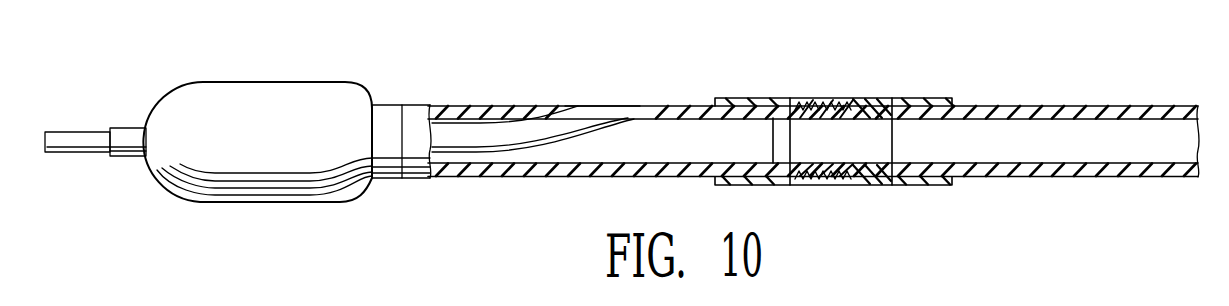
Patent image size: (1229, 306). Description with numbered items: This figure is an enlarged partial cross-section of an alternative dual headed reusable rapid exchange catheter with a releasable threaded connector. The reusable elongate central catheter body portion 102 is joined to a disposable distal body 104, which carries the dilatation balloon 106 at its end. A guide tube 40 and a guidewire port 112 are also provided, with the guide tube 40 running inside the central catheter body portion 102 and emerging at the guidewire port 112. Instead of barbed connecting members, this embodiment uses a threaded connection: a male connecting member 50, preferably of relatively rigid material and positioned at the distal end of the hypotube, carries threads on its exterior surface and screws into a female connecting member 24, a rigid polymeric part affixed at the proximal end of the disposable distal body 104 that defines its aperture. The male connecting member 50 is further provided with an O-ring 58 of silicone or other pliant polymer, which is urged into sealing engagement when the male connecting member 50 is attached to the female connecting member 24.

The female connecting member 24 is at (875, 119).
The guide tube 40 is at (528, 138).
The male connecting member 50 is at (866, 116).
The O-ring 58 is at (863, 184).
The central catheter body portion 102 is at (1073, 107).
The disposable distal body 104 is at (427, 173).
The dilatation balloon 106 is at (320, 82).
The guidewire port 112 is at (593, 105).